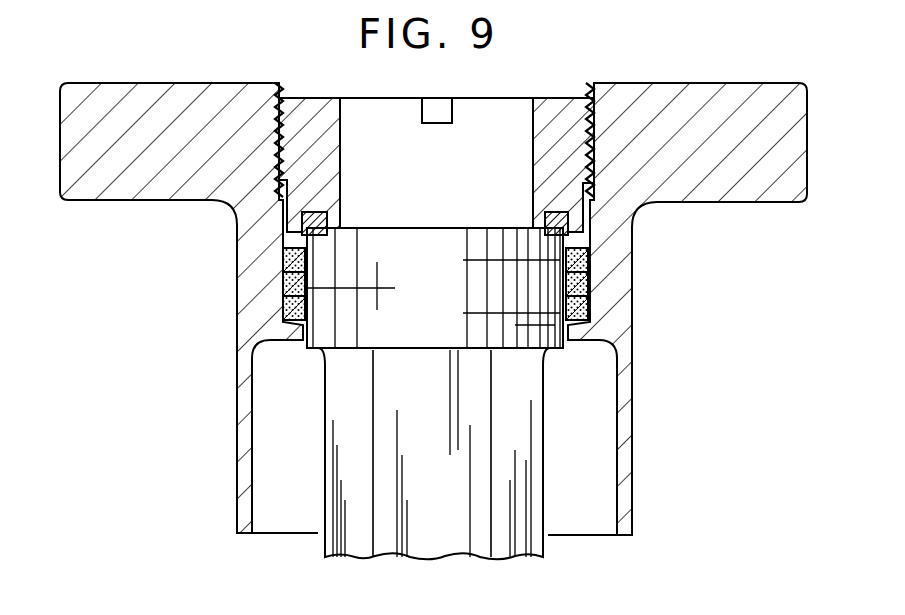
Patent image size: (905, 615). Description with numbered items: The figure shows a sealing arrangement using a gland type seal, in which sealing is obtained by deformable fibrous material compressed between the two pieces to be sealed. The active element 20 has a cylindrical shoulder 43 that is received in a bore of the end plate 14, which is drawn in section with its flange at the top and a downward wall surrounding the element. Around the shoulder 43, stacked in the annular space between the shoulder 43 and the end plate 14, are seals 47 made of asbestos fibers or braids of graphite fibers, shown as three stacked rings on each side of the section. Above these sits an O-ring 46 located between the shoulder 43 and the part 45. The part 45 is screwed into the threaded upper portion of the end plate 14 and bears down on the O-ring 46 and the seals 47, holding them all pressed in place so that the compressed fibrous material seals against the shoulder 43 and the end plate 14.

The end plate 14 is at (693, 130).
The part screwed into the end plate 45 is at (557, 125).
The cylindrical shoulder 43 is at (420, 260).
The O-ring 46 is at (548, 212).
The seals 47 is at (590, 258).
The active element 20 is at (433, 515).